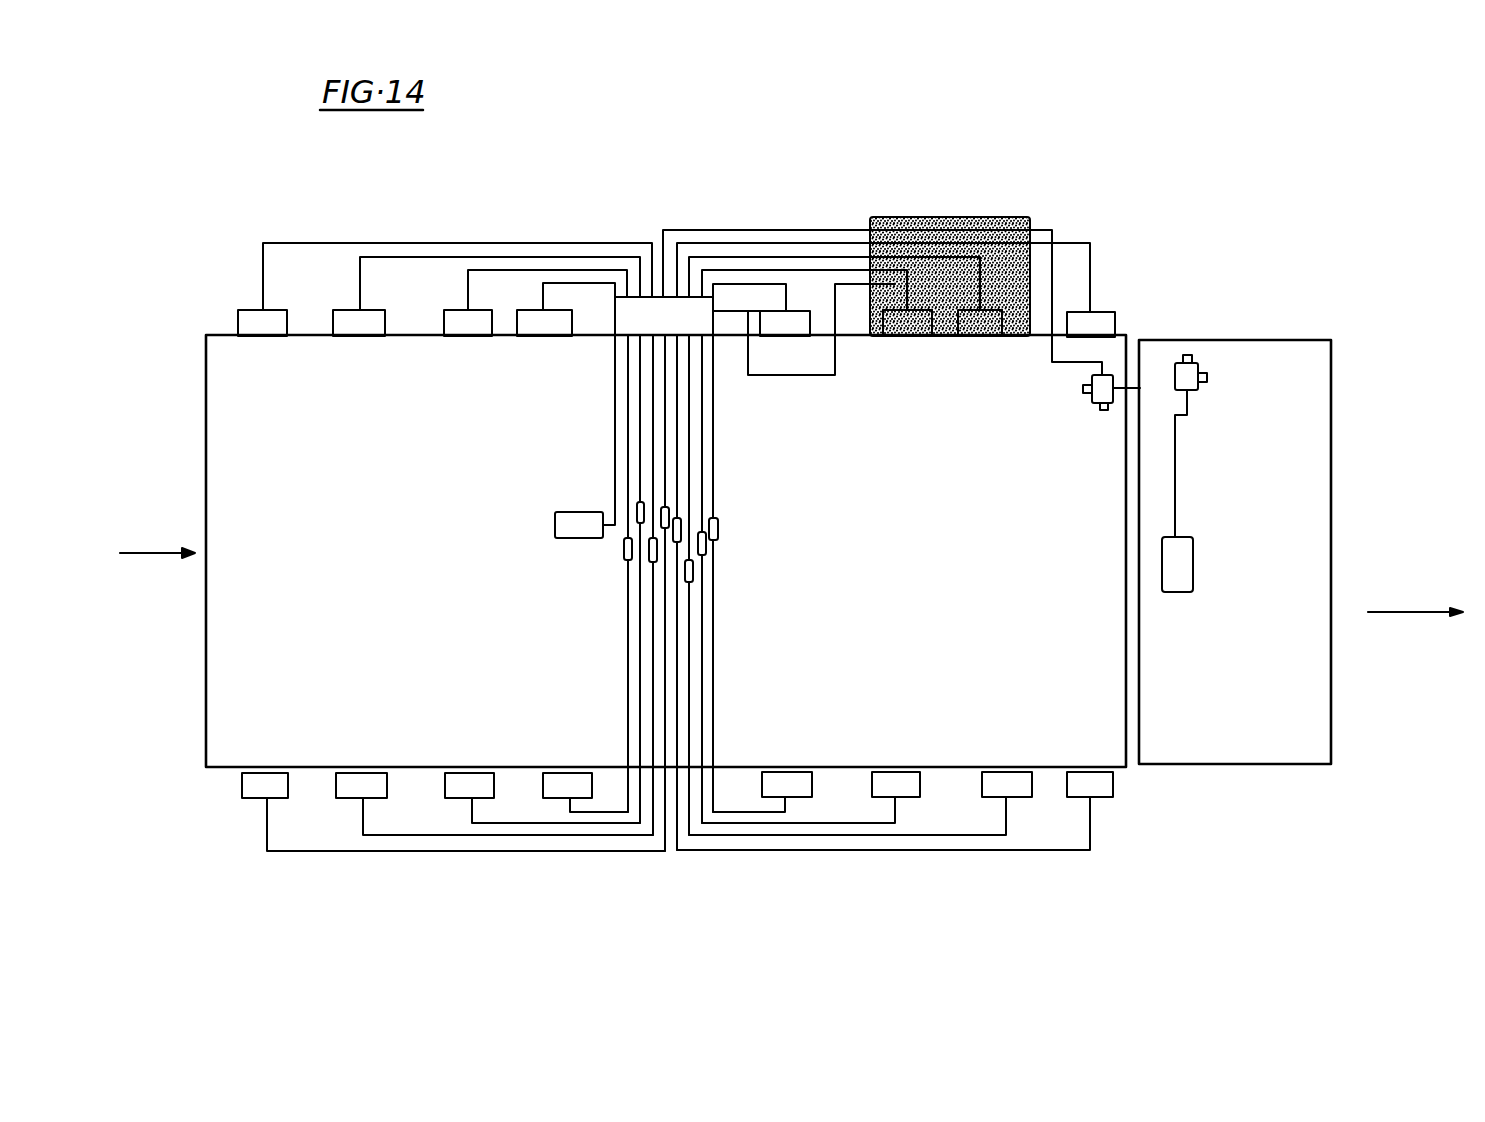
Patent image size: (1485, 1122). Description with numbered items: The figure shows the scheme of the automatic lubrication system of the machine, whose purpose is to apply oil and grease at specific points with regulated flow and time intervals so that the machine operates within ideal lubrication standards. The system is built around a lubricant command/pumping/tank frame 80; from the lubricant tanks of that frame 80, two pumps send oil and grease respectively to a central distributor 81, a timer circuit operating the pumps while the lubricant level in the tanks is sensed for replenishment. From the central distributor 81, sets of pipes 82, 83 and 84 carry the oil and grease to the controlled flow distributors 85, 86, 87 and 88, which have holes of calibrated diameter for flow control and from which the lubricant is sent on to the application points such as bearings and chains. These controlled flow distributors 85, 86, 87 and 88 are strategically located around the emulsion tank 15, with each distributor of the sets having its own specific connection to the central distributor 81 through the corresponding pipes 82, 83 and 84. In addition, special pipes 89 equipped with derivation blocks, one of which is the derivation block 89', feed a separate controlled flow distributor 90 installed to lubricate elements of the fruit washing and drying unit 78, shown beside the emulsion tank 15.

The emulsion tank 15 is at (255, 693).
The fruit washing and drying unit 78 is at (1285, 735).
The lubricant command/pumping/tank frame 80 is at (1000, 240).
The central distributor 81 is at (651, 281).
The pipes 82 is at (525, 257).
The pipes 83 is at (776, 257).
The pipes 84 is at (661, 485).
The controlled flow distributors 85 is at (524, 345).
The controlled flow distributors 86 is at (1073, 342).
The controlled flow distributors 87 is at (1075, 755).
The controlled flow distributors 88 is at (546, 756).
The special pipes 89 is at (1149, 373).
The derivation block 89' is at (1079, 423).
The controlled flow distributor 90 is at (1178, 558).